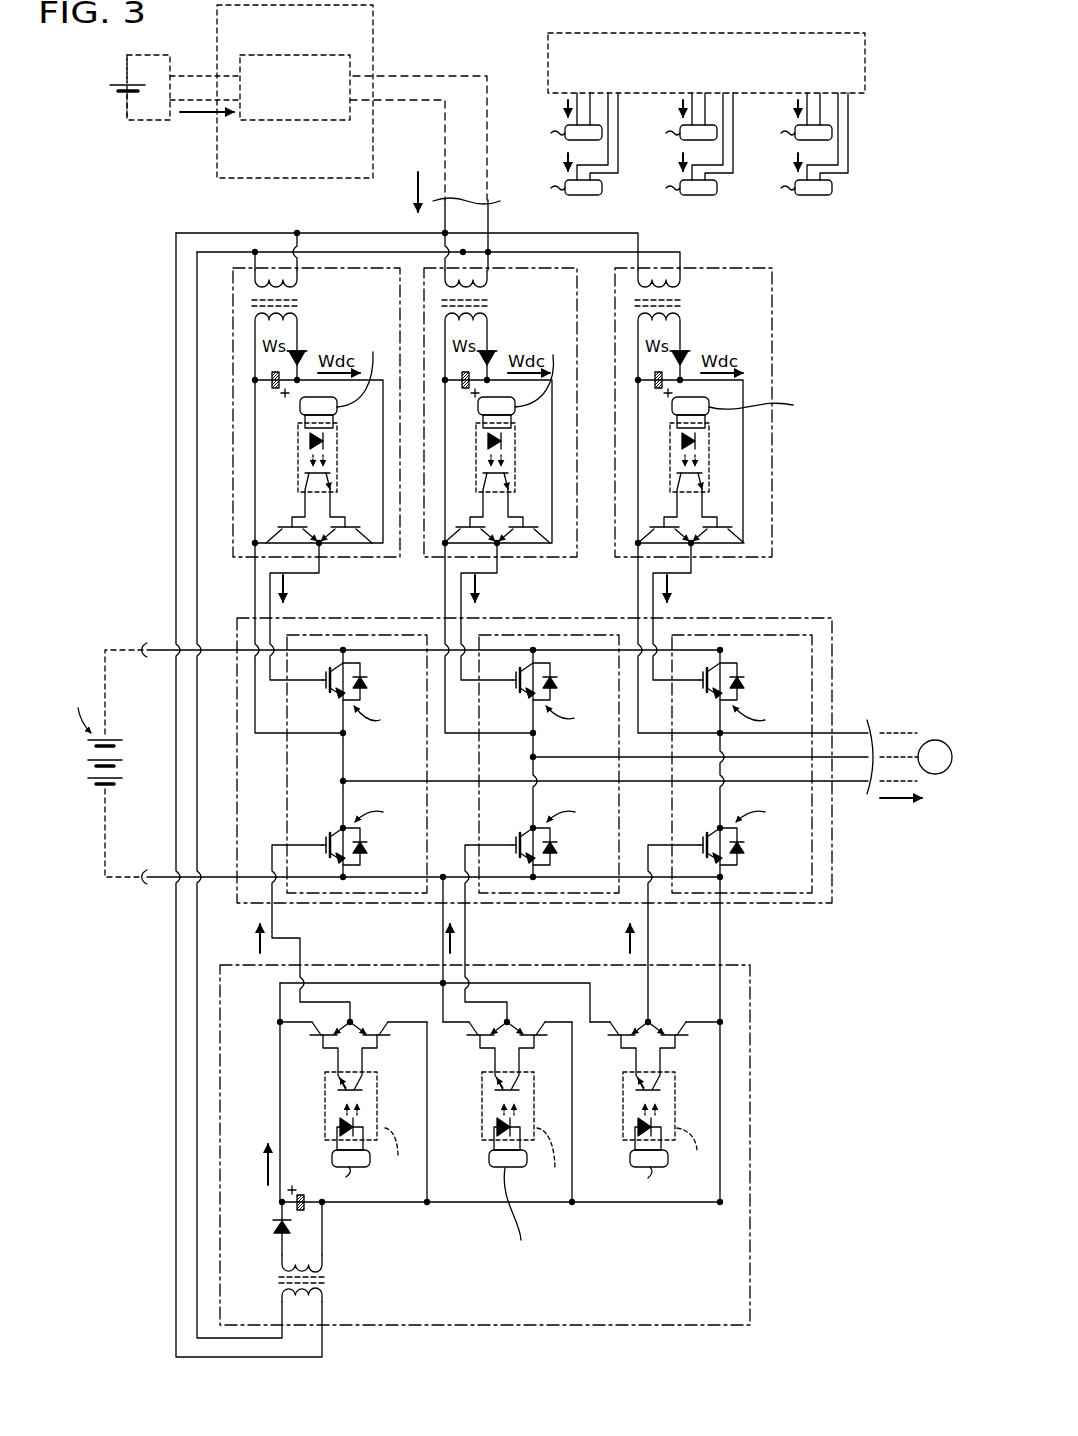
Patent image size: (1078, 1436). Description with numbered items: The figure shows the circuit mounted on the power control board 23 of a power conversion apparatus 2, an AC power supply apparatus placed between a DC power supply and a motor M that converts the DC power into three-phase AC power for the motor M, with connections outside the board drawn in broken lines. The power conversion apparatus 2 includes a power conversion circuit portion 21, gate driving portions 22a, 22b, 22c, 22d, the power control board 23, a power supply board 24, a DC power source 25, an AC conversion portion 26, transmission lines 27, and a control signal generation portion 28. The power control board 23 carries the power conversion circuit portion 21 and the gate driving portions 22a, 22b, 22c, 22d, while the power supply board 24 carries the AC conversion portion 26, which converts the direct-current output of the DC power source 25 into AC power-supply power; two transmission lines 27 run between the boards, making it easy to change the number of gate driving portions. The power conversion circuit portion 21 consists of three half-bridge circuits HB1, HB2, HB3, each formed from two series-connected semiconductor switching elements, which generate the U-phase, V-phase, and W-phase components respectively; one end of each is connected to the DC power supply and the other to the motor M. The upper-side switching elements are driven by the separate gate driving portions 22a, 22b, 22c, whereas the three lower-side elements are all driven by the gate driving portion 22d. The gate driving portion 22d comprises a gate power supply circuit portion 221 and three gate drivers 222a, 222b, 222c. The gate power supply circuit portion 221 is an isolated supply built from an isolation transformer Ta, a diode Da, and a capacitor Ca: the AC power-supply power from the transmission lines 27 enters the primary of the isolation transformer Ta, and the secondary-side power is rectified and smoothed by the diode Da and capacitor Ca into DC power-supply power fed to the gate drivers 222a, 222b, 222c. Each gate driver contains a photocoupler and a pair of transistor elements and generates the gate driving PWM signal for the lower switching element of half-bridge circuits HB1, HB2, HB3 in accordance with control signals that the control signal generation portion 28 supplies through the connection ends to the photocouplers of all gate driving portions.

The power conversion apparatus 2 is at (871, 222).
The power conversion circuit portion 21 is at (813, 617).
The gate driving portion 22a is at (363, 558).
The gate driving portion 22b is at (555, 558).
The gate driving portion 22c is at (746, 558).
The gate driving portion 22d is at (756, 1011).
The power control board 23 is at (817, 325).
The power supply board 24 is at (216, 32).
The DC power source 25 is at (114, 104).
The AC conversion portion 26 is at (292, 125).
The transmission lines 27 is at (432, 66).
The control signal generation portion 28 is at (548, 52).
The gate power supply circuit portion 221 is at (324, 1227).
The gate driver 222a is at (321, 1063).
The gate driver 222b is at (477, 1063).
The gate driver 222c is at (619, 1063).
The first half-bridge circuit HB1 is at (358, 895).
The second half-bridge circuit HB2 is at (548, 895).
The third half-bridge circuit HB3 is at (770, 894).
The motor M is at (935, 738).
The isolation transformer Ta is at (331, 1281).
The diode Da is at (296, 1228).
The capacitor Ca is at (304, 1191).